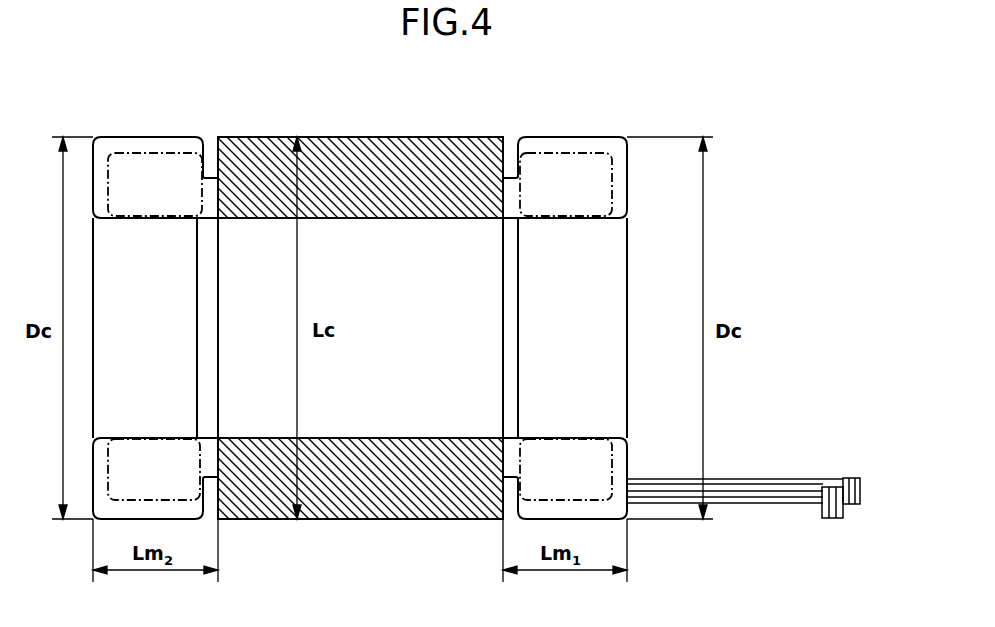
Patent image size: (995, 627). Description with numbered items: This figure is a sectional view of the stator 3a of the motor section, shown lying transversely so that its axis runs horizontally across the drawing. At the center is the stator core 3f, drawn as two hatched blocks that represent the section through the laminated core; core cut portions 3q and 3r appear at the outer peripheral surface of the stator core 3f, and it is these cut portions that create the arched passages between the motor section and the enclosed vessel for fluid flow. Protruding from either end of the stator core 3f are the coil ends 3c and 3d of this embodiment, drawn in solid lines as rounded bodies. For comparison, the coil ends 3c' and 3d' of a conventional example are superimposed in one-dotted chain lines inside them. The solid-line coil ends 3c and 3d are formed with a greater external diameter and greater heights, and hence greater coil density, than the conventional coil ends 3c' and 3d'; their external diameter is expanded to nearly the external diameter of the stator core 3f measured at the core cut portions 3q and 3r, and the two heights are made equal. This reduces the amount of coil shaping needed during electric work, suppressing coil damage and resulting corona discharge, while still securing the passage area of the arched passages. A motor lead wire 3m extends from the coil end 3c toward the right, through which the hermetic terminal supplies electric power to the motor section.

The stator 3a is at (440, 153).
The core cut portion 3q is at (362, 137).
The core cut portion 3r is at (388, 519).
The stator core 3f is at (460, 166).
The coil end 3d is at (155, 301).
The coil end of conventional example 3d' is at (145, 293).
The coil end 3c is at (565, 300).
The coil end of conventional example 3c' is at (589, 292).
The motor lead wire 3m is at (735, 480).